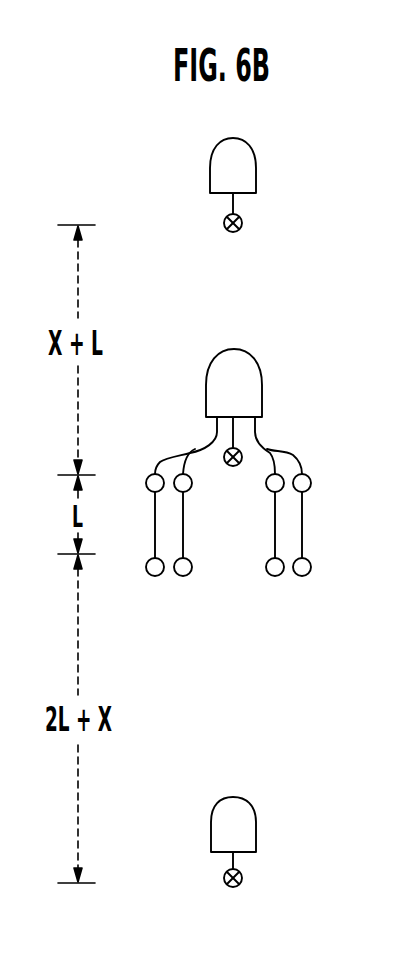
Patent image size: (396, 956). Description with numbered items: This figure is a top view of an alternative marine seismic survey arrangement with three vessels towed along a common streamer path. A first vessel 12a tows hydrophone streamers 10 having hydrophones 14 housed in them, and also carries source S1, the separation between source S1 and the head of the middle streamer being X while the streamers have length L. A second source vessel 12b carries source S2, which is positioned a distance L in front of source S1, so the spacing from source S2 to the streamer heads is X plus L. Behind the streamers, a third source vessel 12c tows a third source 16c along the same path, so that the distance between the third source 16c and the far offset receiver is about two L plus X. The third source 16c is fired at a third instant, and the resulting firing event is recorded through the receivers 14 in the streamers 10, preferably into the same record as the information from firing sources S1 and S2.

The hydrophone streamers 10 is at (155, 530).
The first vessel 12a is at (262, 382).
The second source vessel 12b is at (256, 167).
The third source vessel 12c is at (256, 830).
The hydrophones 14 is at (146, 483).
The third source 16c is at (224, 878).
The source S1 is at (240, 450).
The source S2 is at (242, 226).